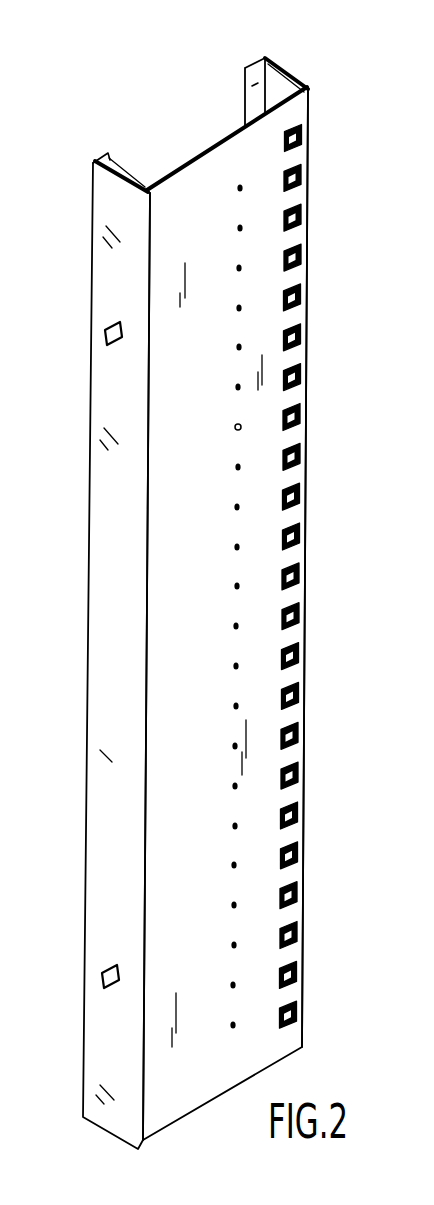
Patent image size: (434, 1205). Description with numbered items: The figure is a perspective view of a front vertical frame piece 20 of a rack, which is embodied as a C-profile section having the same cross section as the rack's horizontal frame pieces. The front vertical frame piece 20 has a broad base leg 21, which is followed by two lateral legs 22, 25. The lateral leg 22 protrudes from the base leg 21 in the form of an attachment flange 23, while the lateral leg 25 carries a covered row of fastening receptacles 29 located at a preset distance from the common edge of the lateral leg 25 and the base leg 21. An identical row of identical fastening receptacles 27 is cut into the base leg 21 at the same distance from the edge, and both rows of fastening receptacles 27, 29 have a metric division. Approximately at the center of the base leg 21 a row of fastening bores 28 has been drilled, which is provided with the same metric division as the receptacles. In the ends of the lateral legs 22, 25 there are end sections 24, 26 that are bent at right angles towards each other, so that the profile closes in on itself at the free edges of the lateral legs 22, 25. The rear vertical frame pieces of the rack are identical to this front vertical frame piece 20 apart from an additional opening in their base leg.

The front vertical frame piece 20 is at (183, 720).
The base leg 21 is at (210, 157).
The lateral leg 22 is at (98, 272).
The attachment flange 23 is at (148, 390).
The end section 24 is at (102, 155).
The lateral leg 25 is at (280, 83).
The end section 26 is at (254, 63).
The fastening receptacles 27 is at (301, 380).
The fastening bores 28 is at (234, 430).
The fastening receptacles 29 is at (317, 220).